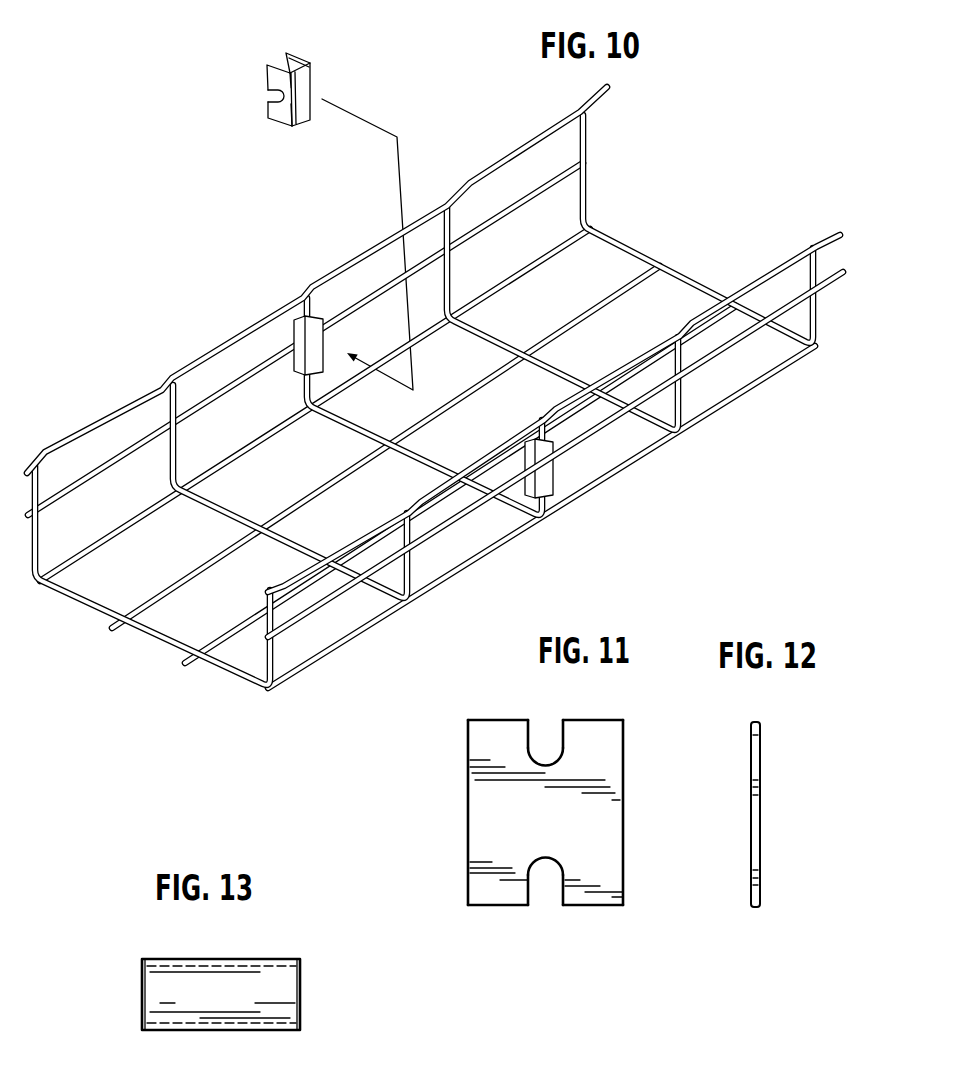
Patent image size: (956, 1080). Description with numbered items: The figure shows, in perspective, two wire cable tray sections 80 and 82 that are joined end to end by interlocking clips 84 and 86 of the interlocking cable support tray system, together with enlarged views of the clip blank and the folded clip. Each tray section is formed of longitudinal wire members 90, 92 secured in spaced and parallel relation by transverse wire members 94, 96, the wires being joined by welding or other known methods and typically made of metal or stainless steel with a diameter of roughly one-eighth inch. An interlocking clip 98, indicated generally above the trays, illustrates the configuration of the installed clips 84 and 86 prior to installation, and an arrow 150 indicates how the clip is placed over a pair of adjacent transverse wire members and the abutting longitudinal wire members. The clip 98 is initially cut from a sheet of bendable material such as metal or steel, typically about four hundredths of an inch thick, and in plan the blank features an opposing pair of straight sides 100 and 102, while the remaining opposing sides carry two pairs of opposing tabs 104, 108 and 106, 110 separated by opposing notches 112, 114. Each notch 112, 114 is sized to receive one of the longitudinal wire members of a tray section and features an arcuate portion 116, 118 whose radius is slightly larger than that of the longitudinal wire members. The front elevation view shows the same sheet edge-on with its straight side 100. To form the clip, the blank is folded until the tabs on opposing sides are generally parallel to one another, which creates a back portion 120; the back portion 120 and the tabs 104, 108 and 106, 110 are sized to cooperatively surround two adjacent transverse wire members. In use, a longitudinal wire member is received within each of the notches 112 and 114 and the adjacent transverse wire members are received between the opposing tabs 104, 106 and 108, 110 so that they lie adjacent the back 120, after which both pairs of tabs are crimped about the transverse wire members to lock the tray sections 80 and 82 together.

In FIG. 10, the tray section 80 is at (218, 673).
In FIG. 10, the tray section 82 is at (630, 248).
In FIG. 10, the interlocking clip 84 is at (293, 330).
In FIG. 10, the interlocking clip 86 is at (560, 478).
In FIG. 10, the longitudinal wire member 90 is at (346, 638).
In FIG. 10, the longitudinal wire member 92 is at (767, 373).
In FIG. 10, the transverse wire member 94 is at (417, 576).
In FIG. 10, the transverse wire member 96 is at (687, 413).
In FIG. 10, the interlocking clip 98 is at (246, 95).
In FIG. 11, the interlocking clip 98 is at (446, 823).
In FIG. 12, the interlocking clip 98 is at (773, 781).
In FIG. 13, the interlocking clip 98 is at (115, 982).
In FIG. 11, the straight side 100 is at (467, 848).
In FIG. 12, the straight side 100 is at (760, 814).
In FIG. 11, the straight side 102 is at (624, 877).
In FIG. 10, the tab 104 is at (272, 78).
In FIG. 11, the tab 104 is at (514, 897).
In FIG. 10, the tab 106 is at (275, 117).
In FIG. 11, the tab 106 is at (596, 900).
In FIG. 10, the tab 108 is at (297, 56).
In FIG. 11, the tab 108 is at (480, 719).
In FIG. 11, the tab 110 is at (610, 722).
In FIG. 10, the notch 112 is at (270, 93).
In FIG. 11, the notch 112 is at (562, 897).
In FIG. 11, the notch 114 is at (562, 728).
In FIG. 11, the arcuate portion 116 is at (563, 860).
In FIG. 11, the arcuate portion 118 is at (563, 753).
In FIG. 10, the back portion 120 is at (308, 83).
In FIG. 13, the back portion 120 is at (253, 982).
In FIG. 10, the arrow 150 is at (399, 152).